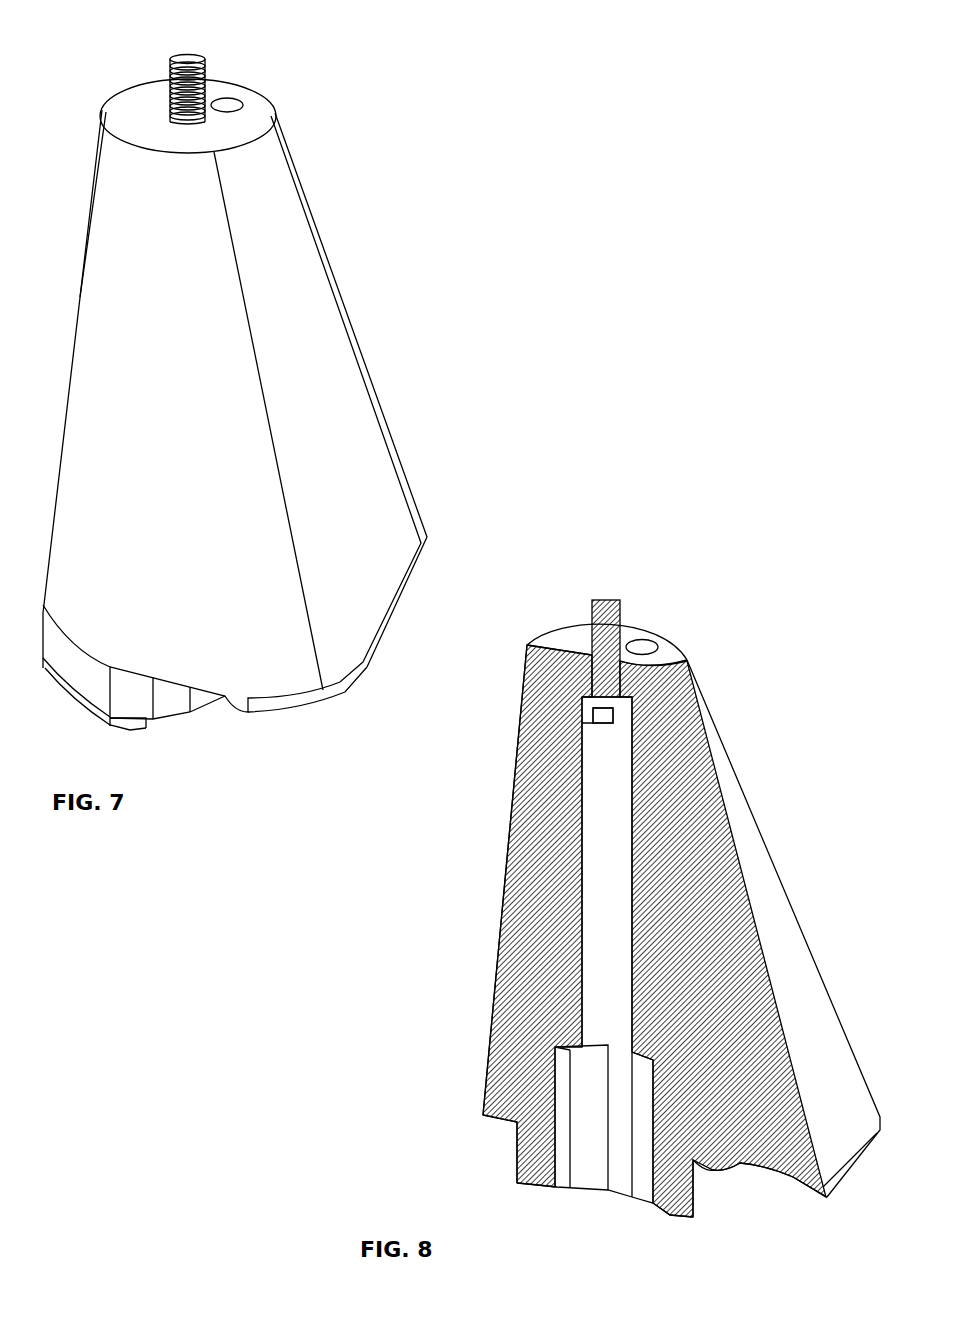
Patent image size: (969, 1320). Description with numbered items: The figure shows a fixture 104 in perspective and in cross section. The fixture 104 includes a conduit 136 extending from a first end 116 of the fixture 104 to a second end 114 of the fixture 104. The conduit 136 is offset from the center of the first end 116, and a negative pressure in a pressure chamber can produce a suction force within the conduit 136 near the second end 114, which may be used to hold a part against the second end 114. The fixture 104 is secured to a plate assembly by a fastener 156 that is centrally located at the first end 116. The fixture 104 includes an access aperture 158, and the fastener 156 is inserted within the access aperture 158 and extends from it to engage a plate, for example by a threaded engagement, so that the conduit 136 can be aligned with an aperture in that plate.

In FIG. 7, the fixture 104 is at (397, 403).
In FIG. 8, the fixture 104 is at (777, 819).
In FIG. 7, the second end 114 is at (285, 734).
In FIG. 8, the second end 114 is at (482, 1184).
In FIG. 7, the first end 116 is at (130, 84).
In FIG. 8, the first end 116 is at (546, 626).
In FIG. 7, the conduit 136 is at (230, 90).
In FIG. 8, the conduit 136 is at (646, 640).
In FIG. 7, the fastener 156 is at (187, 56).
In FIG. 8, the fastener 156 is at (605, 600).
In FIG. 8, the access aperture 158 is at (583, 877).